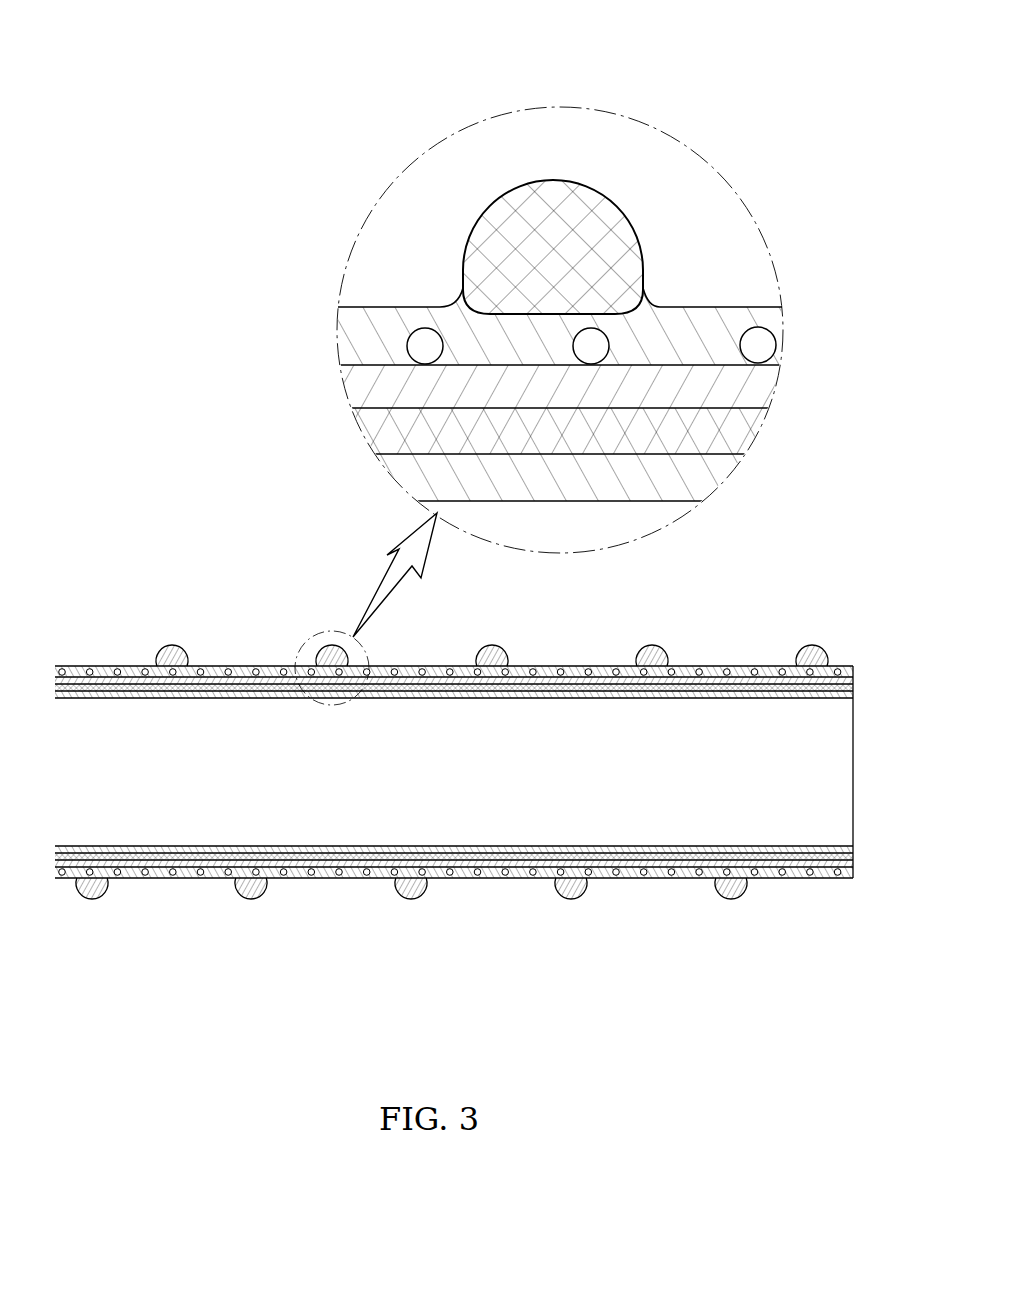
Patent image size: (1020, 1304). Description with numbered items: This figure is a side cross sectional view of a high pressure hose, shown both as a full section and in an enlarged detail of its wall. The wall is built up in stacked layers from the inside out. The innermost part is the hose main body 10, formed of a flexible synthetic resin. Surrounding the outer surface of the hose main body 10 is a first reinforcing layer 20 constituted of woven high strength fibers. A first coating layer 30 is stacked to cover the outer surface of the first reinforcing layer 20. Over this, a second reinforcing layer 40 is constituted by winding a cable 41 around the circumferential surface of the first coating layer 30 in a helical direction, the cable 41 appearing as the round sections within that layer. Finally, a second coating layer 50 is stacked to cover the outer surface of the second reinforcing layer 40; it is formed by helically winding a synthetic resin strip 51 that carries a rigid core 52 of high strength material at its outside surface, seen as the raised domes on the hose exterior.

The hose main body 10 is at (673, 453).
The first reinforcing layer 20 is at (370, 408).
The first coating layer 30 is at (353, 363).
The second reinforcing layer 40 is at (471, 559).
The cable 41 is at (763, 327).
The second coating layer 50 is at (454, 523).
The synthetic resin strip 51 is at (383, 307).
The rigid core 52 is at (535, 177).